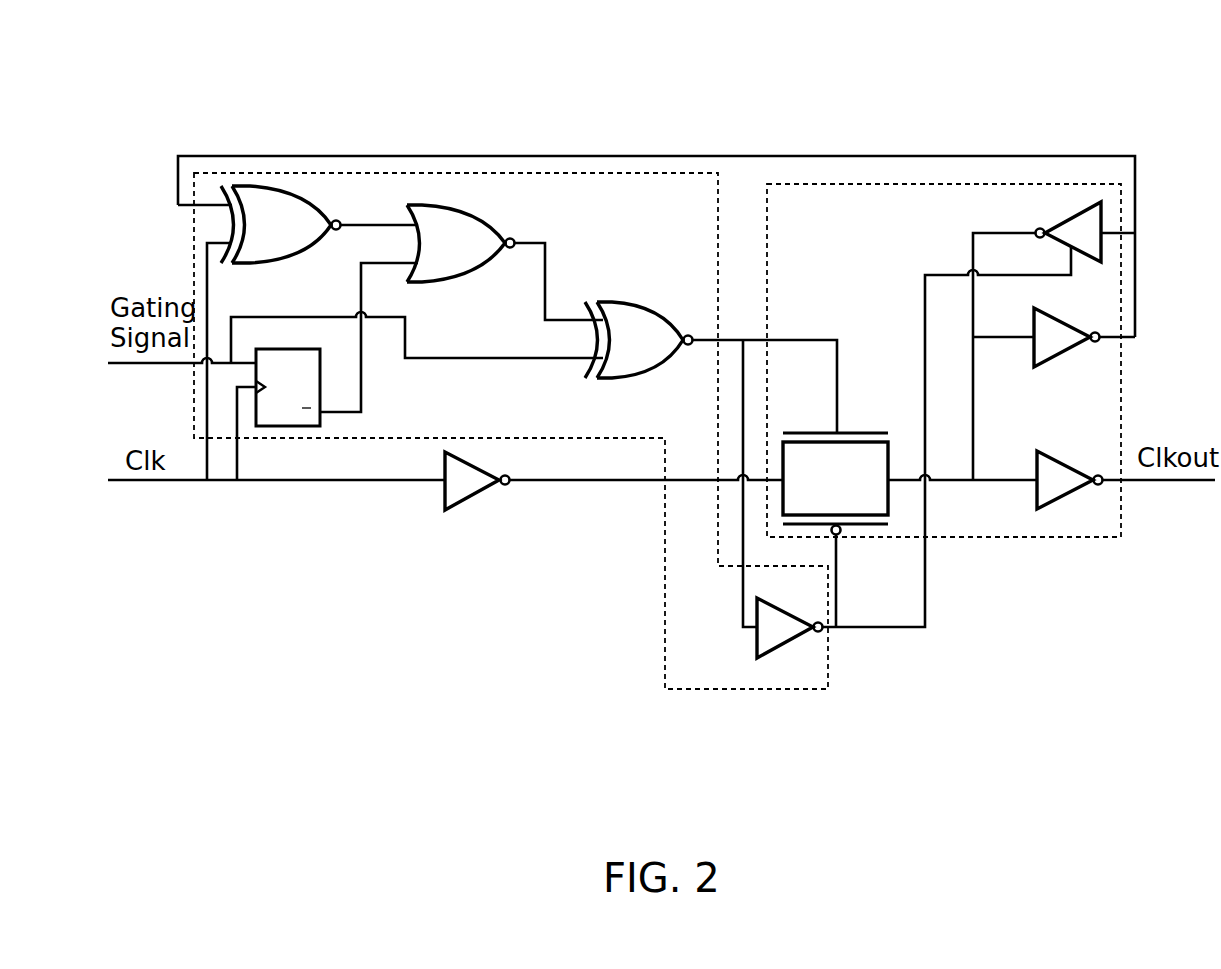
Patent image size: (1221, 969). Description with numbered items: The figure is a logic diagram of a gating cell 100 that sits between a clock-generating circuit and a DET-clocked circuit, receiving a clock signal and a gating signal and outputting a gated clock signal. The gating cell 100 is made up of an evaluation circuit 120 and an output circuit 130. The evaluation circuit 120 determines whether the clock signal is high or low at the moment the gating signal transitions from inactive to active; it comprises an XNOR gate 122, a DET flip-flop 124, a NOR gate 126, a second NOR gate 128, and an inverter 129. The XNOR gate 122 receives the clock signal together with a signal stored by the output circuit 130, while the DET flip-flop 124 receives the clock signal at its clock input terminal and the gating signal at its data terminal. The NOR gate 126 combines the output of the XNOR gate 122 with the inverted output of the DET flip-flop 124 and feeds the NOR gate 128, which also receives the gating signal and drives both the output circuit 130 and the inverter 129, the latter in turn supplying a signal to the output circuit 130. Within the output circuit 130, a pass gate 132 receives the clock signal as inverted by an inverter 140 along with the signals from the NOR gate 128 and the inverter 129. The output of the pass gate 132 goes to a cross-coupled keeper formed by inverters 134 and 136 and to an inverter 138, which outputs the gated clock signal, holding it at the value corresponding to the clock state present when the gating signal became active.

The gating cell 100 is at (851, 86).
The evaluation circuit 120 is at (664, 590).
The XNOR gate 122 is at (262, 272).
The DET flip-flop 124 is at (290, 349).
The NOR gate 126 is at (433, 283).
The NOR gate 128 is at (610, 302).
The inverter 129 is at (766, 655).
The output circuit 130 is at (1018, 540).
The pass gate 132 is at (850, 433).
The inverter 134 is at (1076, 213).
The inverter 136 is at (1048, 357).
The inverter 138 is at (1052, 455).
The inverter 140 is at (460, 498).